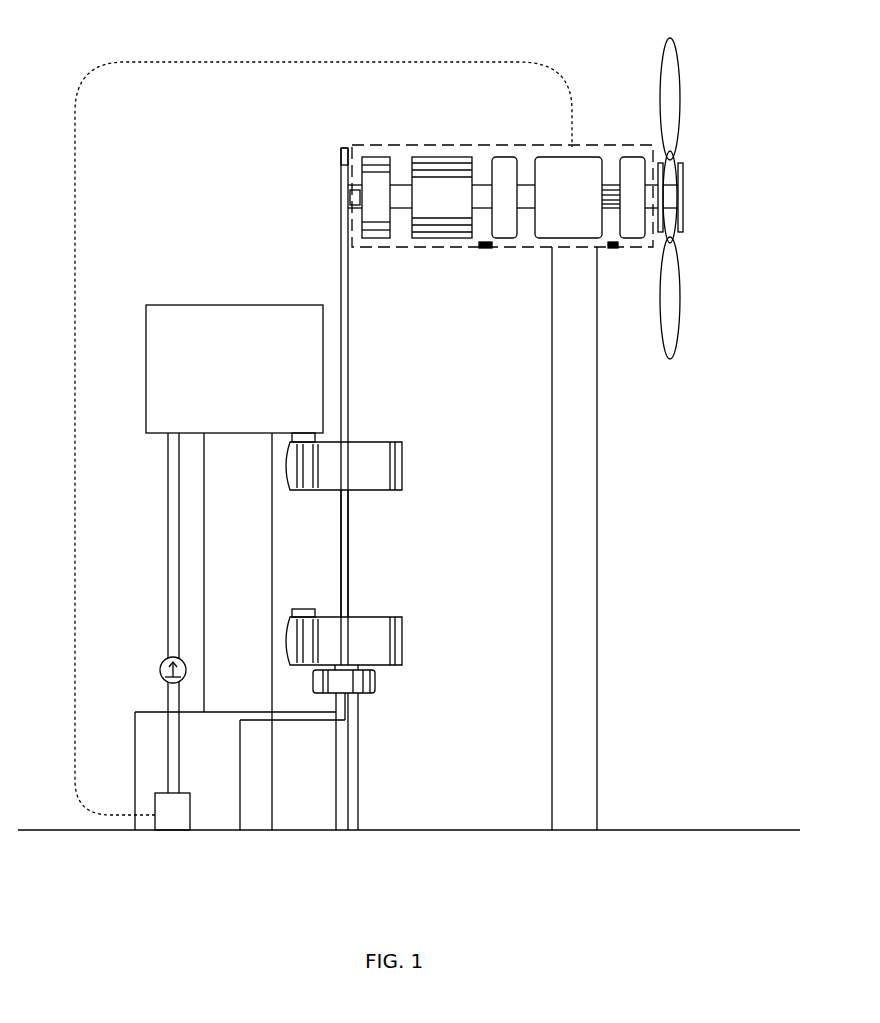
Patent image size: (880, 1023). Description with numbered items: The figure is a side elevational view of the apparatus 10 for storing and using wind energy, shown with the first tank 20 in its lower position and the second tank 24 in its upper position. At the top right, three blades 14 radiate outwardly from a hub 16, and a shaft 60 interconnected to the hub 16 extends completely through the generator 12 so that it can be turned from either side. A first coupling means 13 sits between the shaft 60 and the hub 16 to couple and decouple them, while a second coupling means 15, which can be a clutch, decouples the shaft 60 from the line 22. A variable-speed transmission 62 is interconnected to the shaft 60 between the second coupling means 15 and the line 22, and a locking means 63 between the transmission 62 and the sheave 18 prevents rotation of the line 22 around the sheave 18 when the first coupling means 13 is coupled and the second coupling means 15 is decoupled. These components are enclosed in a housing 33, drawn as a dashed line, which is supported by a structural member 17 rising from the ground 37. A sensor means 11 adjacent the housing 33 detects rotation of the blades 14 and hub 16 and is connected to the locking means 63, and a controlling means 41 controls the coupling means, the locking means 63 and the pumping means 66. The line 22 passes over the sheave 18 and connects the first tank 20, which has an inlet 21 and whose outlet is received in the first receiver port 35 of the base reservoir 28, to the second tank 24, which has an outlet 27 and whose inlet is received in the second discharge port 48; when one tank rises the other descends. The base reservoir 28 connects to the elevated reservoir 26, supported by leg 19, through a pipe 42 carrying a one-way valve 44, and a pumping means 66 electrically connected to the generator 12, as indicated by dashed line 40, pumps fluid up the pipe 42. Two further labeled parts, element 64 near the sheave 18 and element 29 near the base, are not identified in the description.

The apparatus 10 is at (703, 122).
The sensor means 11 is at (613, 250).
The generator 12 is at (553, 167).
The first coupling means 13 is at (632, 165).
The blades 14 is at (672, 97).
The second coupling means 15 is at (506, 166).
The hub 16 is at (683, 170).
The structural member 17 is at (590, 563).
The sheave 18 is at (340, 155).
The leg 19 is at (257, 538).
The first tank 20 is at (390, 650).
The inlet 21 is at (302, 609).
The line 22 is at (341, 262).
The second tank 24 is at (390, 478).
The elevated reservoir 26 is at (146, 365).
The outlet 27 is at (352, 492).
The base reservoir 28 is at (135, 745).
The base 29 is at (350, 797).
The housing 33 is at (455, 250).
The first receiver port 35 is at (358, 668).
The ground 37 is at (672, 826).
The dashed line 40 is at (75, 462).
The controlling means 41 is at (486, 250).
The pipe 42 is at (175, 595).
The one-way valve 44 is at (163, 662).
The second discharge port 48 is at (318, 432).
The shaft 60 is at (610, 185).
The transmission 62 is at (423, 158).
The locking means 63 is at (378, 232).
The shaft bearing 64 is at (350, 198).
The pumping means 66 is at (172, 820).